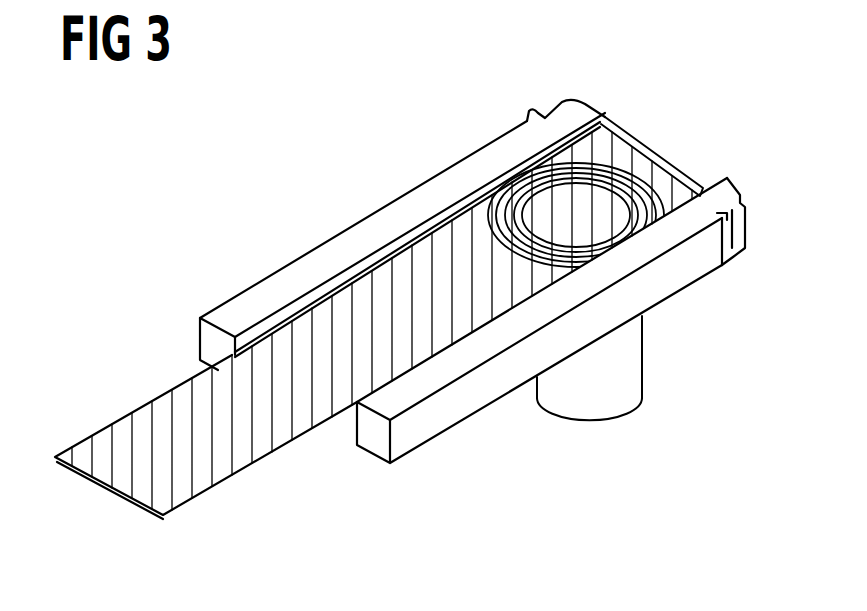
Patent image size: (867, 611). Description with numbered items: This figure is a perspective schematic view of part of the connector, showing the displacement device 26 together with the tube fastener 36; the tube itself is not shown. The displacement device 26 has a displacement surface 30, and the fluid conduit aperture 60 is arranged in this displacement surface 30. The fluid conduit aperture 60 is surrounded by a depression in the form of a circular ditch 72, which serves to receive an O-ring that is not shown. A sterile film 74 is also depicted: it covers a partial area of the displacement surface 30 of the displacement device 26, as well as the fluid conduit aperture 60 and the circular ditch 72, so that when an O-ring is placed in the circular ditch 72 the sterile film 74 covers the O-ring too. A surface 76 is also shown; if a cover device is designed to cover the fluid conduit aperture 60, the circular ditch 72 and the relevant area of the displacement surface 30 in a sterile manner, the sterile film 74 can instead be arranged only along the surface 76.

The displacement device 26 is at (435, 420).
The displacement surface 30 is at (358, 290).
The tube fastener 36 is at (623, 370).
The fluid conduit aperture 60 is at (622, 200).
The circular ditch 72 is at (602, 222).
The sterile film 74 is at (208, 482).
The surface 76 is at (685, 135).